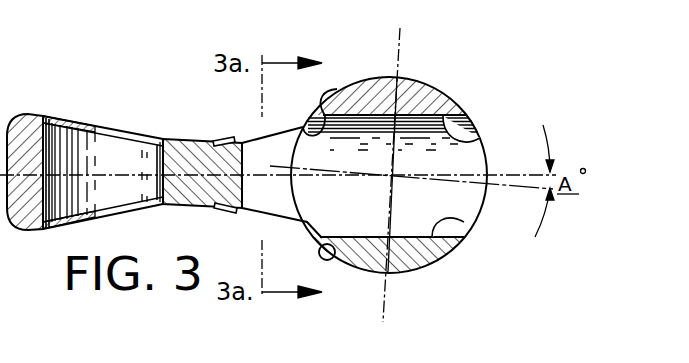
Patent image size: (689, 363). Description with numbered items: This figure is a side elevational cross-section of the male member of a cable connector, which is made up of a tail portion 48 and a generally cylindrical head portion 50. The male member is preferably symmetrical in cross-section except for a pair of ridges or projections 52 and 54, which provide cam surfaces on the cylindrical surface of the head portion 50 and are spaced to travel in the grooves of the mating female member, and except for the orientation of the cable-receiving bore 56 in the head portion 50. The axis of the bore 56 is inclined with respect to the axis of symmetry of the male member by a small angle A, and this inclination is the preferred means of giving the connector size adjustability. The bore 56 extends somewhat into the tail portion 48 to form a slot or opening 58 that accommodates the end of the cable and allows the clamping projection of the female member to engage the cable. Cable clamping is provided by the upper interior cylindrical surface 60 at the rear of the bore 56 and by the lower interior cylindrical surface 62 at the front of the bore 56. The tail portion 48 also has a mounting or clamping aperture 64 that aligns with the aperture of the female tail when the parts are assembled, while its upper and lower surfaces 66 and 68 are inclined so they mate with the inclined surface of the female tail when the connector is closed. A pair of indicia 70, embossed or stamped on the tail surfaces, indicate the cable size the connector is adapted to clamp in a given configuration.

The tail portion 48 is at (17, 218).
The head portion 50 is at (420, 270).
The ridge or projection 52 is at (331, 260).
The ridge or projection 54 is at (326, 88).
The cable-receiving bore 56 is at (480, 135).
The slot or opening 58 is at (251, 137).
The upper interior cylindrical surface 60 is at (305, 128).
The lower interior cylindrical surface 62 is at (473, 227).
The mounting or clamping aperture 64 is at (52, 127).
The upper surface 66 is at (115, 124).
The lower surface 68 is at (108, 216).
The indicia 70 is at (222, 138).